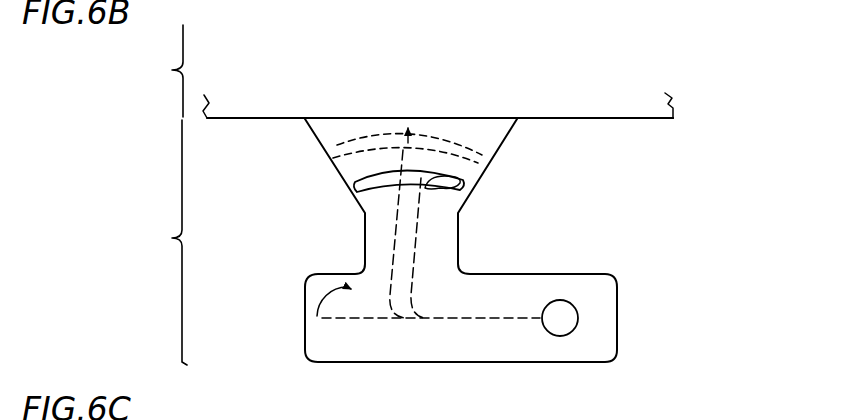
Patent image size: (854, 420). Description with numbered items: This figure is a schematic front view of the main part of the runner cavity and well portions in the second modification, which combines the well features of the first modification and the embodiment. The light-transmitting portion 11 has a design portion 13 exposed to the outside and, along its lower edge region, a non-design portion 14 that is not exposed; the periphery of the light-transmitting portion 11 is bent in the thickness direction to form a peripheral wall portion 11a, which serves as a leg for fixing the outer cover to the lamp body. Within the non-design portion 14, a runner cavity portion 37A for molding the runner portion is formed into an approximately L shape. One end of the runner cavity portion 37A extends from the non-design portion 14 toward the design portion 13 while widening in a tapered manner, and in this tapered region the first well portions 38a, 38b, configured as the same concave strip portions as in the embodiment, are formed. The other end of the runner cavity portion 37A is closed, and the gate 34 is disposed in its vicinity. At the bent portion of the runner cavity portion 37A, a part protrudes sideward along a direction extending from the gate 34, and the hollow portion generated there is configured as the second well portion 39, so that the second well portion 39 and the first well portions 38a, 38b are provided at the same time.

The design portion 13 is at (156, 71).
The non-design portion 14 is at (158, 242).
The light-transmitting portion 11 is at (670, 106).
The peripheral wall portion 11a is at (640, 121).
The runner cavity portion 37A is at (453, 244).
The first well portion 38b is at (337, 153).
The first well portion 38a is at (355, 193).
The second well portion 39 is at (305, 351).
The gate 34 is at (560, 336).